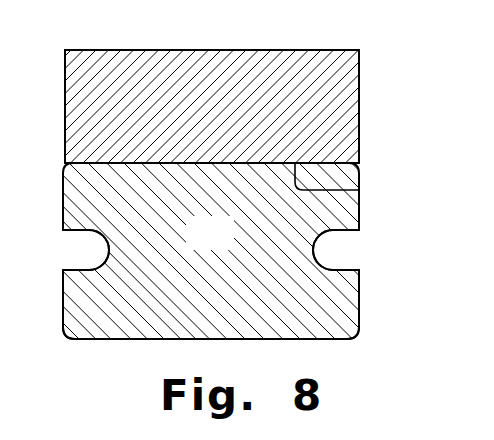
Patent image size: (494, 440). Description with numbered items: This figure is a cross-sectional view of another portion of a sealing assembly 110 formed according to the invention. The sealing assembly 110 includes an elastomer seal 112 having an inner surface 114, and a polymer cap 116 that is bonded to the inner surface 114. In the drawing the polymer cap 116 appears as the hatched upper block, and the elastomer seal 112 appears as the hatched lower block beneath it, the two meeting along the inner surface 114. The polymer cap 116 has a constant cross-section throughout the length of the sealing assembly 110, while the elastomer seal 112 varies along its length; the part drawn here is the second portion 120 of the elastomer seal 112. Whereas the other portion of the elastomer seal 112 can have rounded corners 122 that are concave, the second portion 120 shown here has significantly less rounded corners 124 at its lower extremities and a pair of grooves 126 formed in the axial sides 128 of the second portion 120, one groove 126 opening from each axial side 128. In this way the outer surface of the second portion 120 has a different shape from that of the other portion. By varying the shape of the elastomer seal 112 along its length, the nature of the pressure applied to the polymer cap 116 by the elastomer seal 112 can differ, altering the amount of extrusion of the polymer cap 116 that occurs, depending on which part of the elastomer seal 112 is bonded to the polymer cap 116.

The sealing assembly 110 is at (368, 160).
The elastomer seal 112 is at (336, 306).
The inner surface 114 is at (359, 190).
The polymer cap 116 is at (205, 70).
The second portion 120 is at (230, 246).
The rounded corners 122 is at (181, 25).
The less rounded corners 124 is at (67, 340).
The grooves 126 is at (332, 236).
The axial sides 128 is at (362, 210).